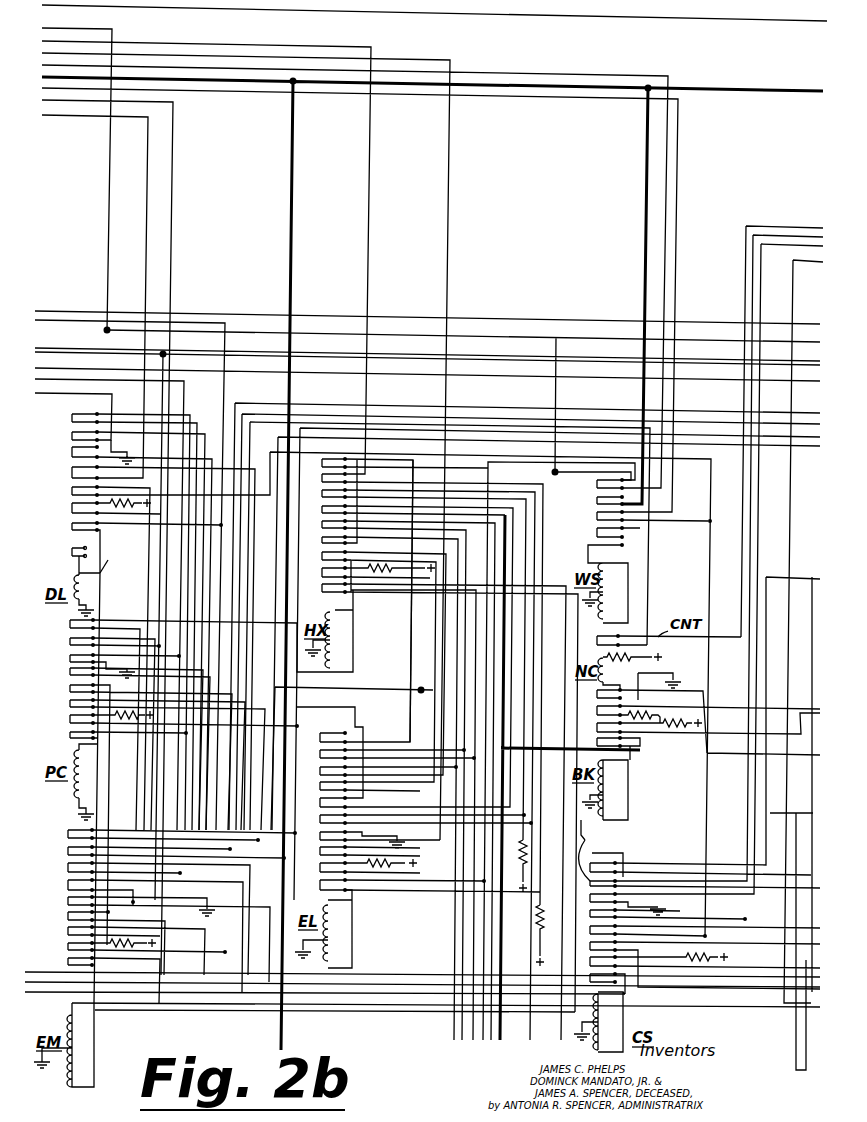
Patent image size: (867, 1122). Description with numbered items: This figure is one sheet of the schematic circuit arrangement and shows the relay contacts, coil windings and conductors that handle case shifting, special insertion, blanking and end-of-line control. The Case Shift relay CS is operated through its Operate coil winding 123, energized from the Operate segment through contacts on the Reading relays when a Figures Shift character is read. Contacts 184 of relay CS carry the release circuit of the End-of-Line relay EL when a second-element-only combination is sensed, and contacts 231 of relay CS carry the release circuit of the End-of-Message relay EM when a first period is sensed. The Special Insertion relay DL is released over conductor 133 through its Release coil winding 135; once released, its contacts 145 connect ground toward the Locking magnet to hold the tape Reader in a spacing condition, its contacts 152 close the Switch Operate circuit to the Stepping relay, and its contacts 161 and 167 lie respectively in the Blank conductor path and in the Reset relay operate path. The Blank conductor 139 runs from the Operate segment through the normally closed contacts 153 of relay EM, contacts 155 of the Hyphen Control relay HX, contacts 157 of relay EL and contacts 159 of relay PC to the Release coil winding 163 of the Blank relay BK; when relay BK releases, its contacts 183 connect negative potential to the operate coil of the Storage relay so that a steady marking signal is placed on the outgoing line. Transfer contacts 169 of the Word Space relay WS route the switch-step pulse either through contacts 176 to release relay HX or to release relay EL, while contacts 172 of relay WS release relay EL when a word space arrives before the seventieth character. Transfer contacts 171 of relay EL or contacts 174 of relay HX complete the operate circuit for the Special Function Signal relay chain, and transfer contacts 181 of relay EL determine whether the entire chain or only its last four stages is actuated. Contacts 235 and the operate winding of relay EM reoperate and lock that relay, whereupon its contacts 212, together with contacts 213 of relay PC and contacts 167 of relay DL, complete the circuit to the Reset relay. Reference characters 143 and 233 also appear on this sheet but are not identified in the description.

The contacts of relay DL 152 is at (72, 422).
The relay contact 143 is at (72, 440).
The contacts on relay DL 145 is at (72, 457).
The contacts of Insertion relay DL 167 is at (72, 478).
The contacts of relay DL 161 is at (72, 513).
The Release coil winding of Special Insertion relay DL 135 is at (72, 552).
The conductor 133 is at (108, 560).
The normally closed contacts of Hyphen Control relay HX 155 is at (325, 466).
The contacts on Hyphen Control relay HX 174 is at (326, 513).
The contacts of Hyphen Control relay HX 176 is at (326, 558).
The Blank conductor 139 is at (410, 658).
The contacts of Insertion relay PC 213 is at (70, 675).
The normally closed contacts of relay PC 159 is at (70, 700).
The normally closed contacts of End-of-Line relay EL 157 is at (330, 728).
The transfer contacts on End-of-Line relay EL 181 is at (326, 758).
The transfer contacts on End-of-Line relay EL 171 is at (326, 784).
The transfer contacts of Word Space relay WS 169 is at (597, 488).
The contacts on Word Space relay WS 172 is at (597, 512).
The contacts on Blank relay BK 183 is at (597, 706).
The release coil winding of Blank relay BK 163 is at (612, 775).
The contacts of Case Shift relay CS 231 is at (552, 812).
The contacts on Case Shift relay CS 184 is at (608, 907).
The contacts of relay EM 212 is at (68, 905).
The normally closed contacts of End-of-Message relay EM 153 is at (68, 927).
The contacts of relay EM 235 is at (68, 958).
The relay coil EM 233 is at (84, 1033).
The Operate coil winding of Case Shift relay CS 123 is at (612, 1015).